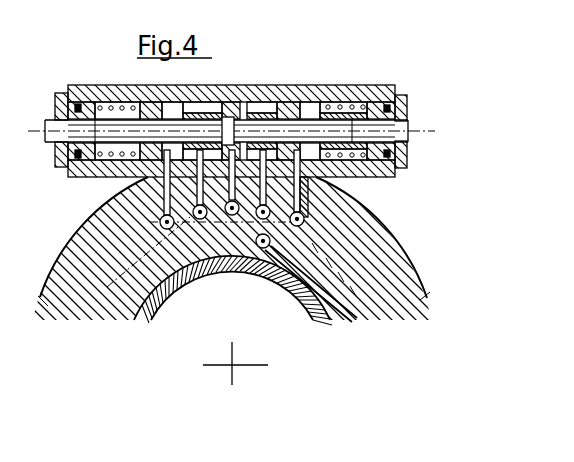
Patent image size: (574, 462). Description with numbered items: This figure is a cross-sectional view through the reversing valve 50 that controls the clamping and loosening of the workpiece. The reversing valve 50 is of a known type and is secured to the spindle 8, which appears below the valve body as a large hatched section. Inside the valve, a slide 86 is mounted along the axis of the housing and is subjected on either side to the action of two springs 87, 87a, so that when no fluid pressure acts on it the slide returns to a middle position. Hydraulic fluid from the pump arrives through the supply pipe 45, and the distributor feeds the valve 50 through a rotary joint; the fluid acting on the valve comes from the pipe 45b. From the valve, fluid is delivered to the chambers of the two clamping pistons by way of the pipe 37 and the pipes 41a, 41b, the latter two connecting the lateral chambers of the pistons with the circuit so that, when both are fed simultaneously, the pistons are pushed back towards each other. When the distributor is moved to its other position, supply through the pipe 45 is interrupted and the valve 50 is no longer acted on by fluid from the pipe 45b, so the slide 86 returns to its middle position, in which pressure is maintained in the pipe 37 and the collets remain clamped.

The spindle 8 is at (397, 270).
The pipe 37 is at (197, 222).
The pipe 41a is at (262, 250).
The pipe 41b is at (295, 235).
The supply pipe 45 is at (168, 222).
The pipe 45b is at (480, 180).
The reversing valve 50 is at (383, 50).
The slide 86 is at (257, 100).
The spring 87 is at (123, 103).
The spring 87a is at (357, 98).